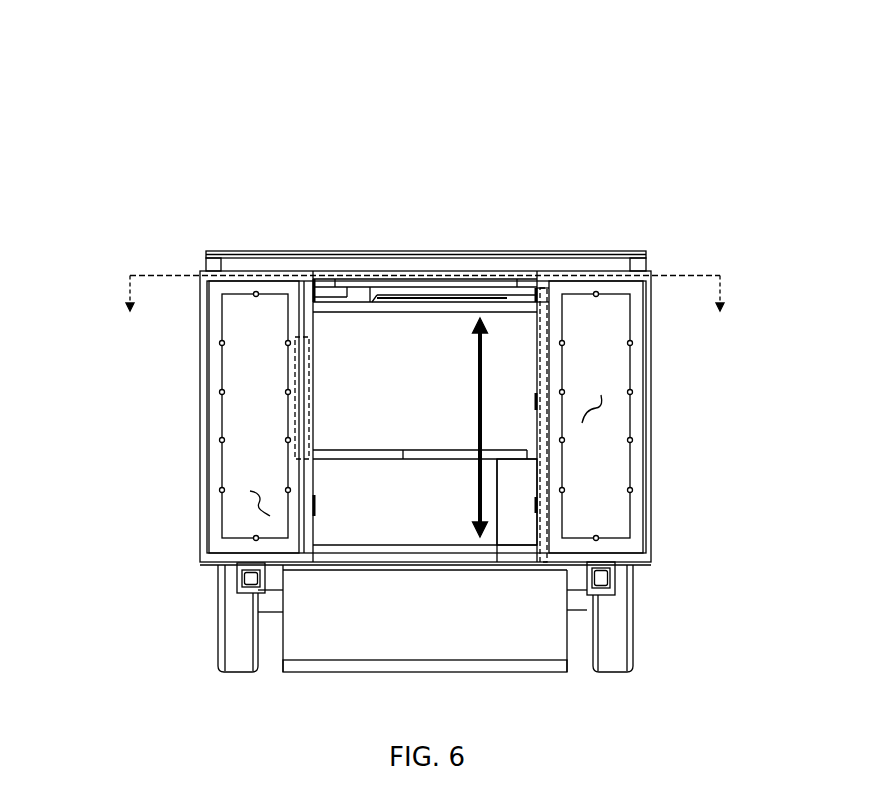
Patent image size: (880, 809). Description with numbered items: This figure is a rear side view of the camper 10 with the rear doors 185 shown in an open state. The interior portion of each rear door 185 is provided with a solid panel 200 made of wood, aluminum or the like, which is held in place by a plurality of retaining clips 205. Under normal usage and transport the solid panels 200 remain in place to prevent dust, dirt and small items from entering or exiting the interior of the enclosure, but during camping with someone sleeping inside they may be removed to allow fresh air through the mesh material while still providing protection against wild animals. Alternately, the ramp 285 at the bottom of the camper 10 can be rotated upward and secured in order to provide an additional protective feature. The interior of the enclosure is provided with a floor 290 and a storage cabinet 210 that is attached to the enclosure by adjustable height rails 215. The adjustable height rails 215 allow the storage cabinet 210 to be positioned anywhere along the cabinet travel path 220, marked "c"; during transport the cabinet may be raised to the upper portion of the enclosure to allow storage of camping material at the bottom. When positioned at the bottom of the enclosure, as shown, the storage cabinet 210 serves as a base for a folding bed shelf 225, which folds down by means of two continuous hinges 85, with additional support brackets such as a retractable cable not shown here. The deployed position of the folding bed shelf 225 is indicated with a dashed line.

The camper 10 is at (96, 145).
The continuous hinge 85 is at (302, 337).
The rear doors 185 is at (200, 440).
The solid panel 200 is at (257, 505).
The retaining clips 205 is at (222, 343).
The storage cabinet 210 is at (517, 550).
The adjustable height rails 215 is at (543, 302).
The cabinet travel path 220 is at (478, 532).
The folding bed shelf 225 is at (362, 454).
The ramp 285 is at (550, 630).
The floor 290 is at (400, 547).